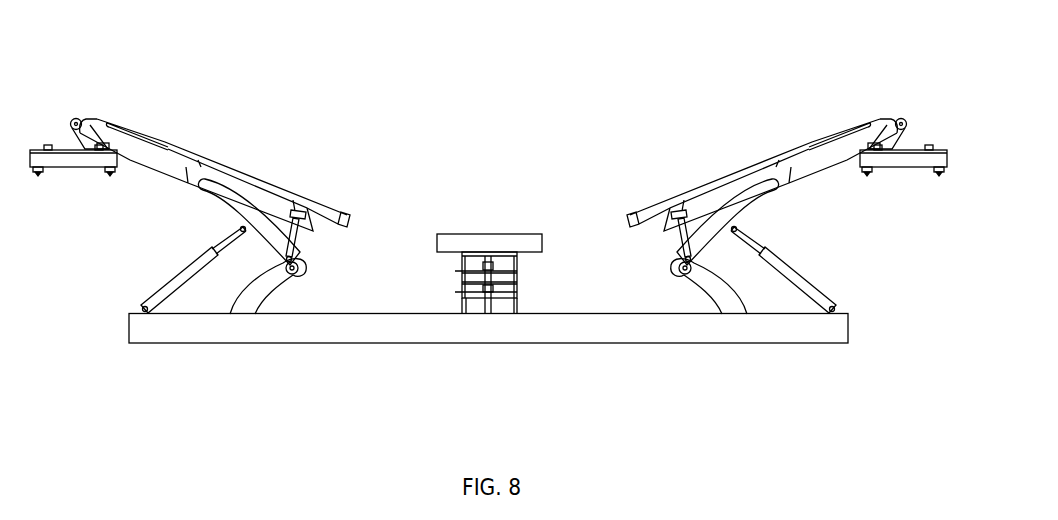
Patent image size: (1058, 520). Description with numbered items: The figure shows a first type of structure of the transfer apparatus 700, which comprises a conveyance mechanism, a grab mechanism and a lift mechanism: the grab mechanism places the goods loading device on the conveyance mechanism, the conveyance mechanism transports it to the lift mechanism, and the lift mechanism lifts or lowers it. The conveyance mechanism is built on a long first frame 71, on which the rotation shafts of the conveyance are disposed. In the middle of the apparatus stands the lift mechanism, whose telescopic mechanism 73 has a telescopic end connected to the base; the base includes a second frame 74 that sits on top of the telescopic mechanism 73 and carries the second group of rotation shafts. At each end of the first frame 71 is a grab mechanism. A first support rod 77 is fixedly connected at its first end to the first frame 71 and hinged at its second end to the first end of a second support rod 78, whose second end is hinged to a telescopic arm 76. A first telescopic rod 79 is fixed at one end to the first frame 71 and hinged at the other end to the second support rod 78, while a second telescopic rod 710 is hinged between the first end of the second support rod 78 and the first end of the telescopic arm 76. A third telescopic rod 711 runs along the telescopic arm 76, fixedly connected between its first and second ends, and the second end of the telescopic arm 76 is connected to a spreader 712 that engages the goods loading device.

The first frame 71 is at (545, 330).
The telescopic mechanism 73 is at (473, 298).
The second frame 74 is at (486, 234).
The telescopic arm 76 is at (71, 138).
The first support rod 77 is at (262, 288).
The second support rod 78 is at (286, 253).
The first telescopic rod 79 is at (259, 240).
The transfer apparatus 700 is at (164, 335).
The second telescopic rod 710 is at (301, 212).
The third telescopic rod 711 is at (128, 126).
The spreader 712 is at (53, 149).